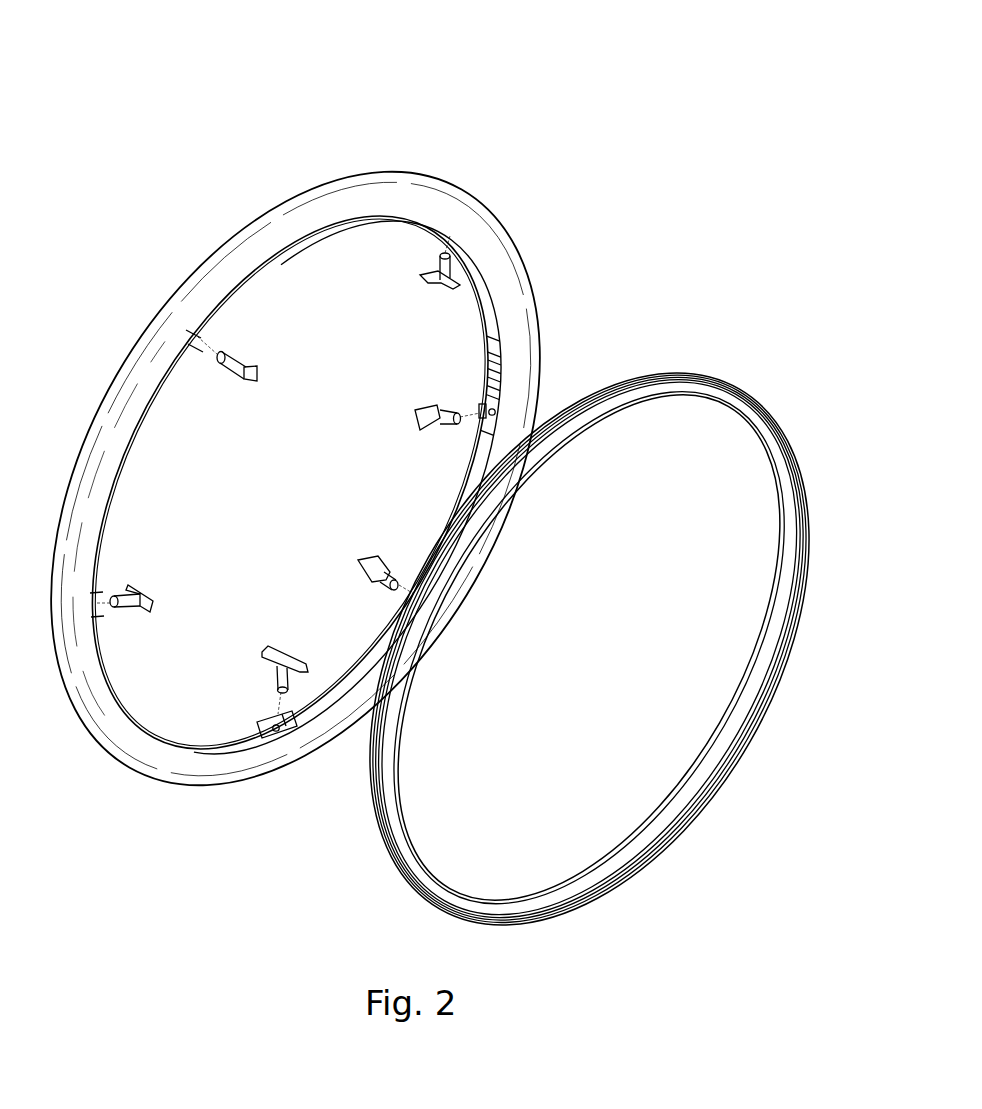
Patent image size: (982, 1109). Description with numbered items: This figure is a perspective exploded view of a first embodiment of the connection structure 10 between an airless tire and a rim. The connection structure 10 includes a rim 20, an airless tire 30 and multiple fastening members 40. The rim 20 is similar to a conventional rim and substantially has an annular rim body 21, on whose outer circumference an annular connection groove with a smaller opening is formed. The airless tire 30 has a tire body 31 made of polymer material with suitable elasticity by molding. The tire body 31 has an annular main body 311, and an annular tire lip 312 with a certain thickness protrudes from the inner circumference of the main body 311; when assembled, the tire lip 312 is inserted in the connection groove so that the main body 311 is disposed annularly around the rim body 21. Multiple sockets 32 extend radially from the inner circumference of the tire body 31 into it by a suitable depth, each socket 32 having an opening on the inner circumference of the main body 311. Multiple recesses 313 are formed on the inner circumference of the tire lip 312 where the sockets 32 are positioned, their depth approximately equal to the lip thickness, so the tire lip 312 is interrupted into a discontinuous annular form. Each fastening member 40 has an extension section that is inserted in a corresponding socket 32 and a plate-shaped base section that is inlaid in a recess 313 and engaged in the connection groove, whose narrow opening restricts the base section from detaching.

The connection structure 10 is at (118, 946).
The rim 20 is at (686, 342).
The rim body 21 is at (768, 442).
The airless tire 30 is at (311, 143).
The tire body 31 is at (256, 209).
The main body 311 is at (403, 187).
The tire lip 312 is at (230, 740).
The recesses 313 is at (458, 238).
The sockets 32 is at (488, 411).
The fastening members 40 is at (412, 289).